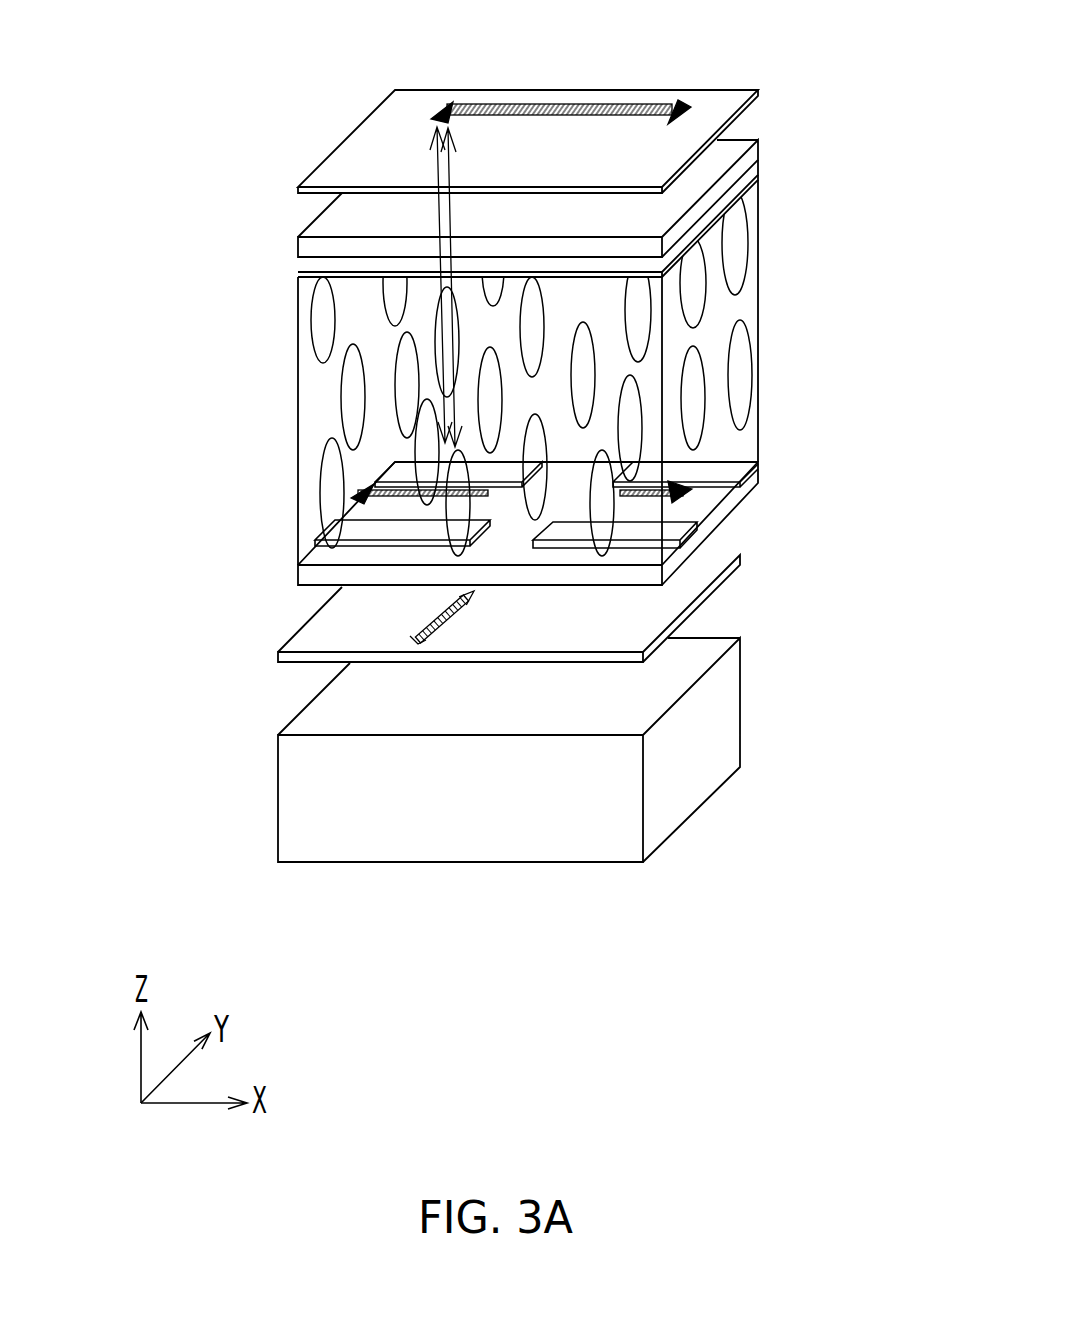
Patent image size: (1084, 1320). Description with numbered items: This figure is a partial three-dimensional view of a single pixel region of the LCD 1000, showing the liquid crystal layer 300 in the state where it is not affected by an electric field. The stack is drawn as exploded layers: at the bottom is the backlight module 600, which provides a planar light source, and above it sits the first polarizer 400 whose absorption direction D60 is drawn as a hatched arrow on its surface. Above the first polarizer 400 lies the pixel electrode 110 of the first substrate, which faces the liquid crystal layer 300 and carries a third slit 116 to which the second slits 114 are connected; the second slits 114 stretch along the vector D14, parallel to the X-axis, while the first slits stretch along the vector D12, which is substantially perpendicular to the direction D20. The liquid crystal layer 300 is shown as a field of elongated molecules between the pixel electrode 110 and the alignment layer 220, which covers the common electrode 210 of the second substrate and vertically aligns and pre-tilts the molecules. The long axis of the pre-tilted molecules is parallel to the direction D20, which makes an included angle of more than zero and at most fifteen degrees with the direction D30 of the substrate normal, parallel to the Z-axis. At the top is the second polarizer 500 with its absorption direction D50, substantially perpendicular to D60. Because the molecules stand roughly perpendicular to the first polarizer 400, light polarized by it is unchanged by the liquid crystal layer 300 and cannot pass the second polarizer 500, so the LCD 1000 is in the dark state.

The second polarizer 500 is at (720, 122).
The common electrode 210 is at (752, 175).
The alignment layer 220 is at (752, 193).
The liquid crystal layer 300 is at (743, 308).
The pixel electrode 110 is at (737, 472).
The second slits 114 is at (711, 502).
The third slit 116 is at (487, 544).
The first polarizer 400 is at (643, 630).
The backlight module 600 is at (675, 803).
The LCD 1000 is at (812, 979).
The vector D12 is at (405, 497).
The vector D14 is at (645, 498).
The direction D20 is at (437, 205).
The direction D30 is at (450, 177).
The absorption direction D50 is at (577, 105).
The absorption direction D60 is at (442, 623).